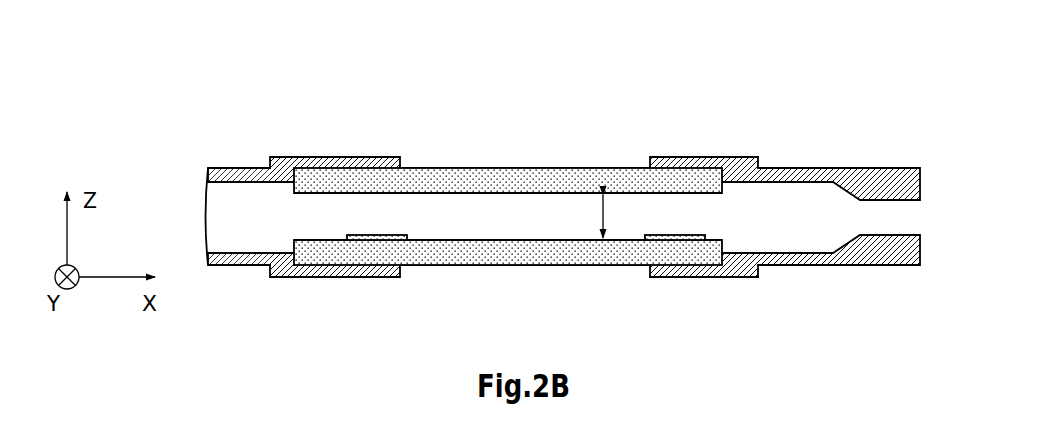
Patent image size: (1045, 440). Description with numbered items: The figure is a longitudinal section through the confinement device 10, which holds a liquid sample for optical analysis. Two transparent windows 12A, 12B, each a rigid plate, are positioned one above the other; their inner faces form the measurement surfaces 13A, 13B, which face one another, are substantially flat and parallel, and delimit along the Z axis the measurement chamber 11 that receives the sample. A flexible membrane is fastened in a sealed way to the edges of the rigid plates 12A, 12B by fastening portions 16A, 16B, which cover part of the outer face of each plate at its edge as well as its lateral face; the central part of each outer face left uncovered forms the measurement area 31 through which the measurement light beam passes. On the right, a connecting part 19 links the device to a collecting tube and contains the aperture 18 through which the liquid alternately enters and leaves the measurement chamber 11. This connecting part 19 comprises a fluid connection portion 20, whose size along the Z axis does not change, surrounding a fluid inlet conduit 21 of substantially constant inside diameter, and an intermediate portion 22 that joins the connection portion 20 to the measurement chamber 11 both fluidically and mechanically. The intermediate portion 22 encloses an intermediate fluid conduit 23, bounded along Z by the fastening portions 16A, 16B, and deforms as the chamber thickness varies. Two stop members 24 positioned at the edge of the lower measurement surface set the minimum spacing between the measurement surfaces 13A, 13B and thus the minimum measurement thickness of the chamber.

The confinement device 10 is at (238, 108).
The measurement chamber 11 is at (548, 230).
The transparent window 12A is at (507, 266).
The transparent window 12B is at (507, 168).
The measurement surface 13A is at (464, 240).
The measurement surface 13B is at (470, 193).
The fastening portion 16A is at (320, 278).
The fastening portion 16B is at (318, 157).
The aperture 18 is at (719, 218).
The connecting part 19 is at (847, 118).
The fluid connection portion 20 is at (885, 168).
The fluid inlet conduit 21 is at (896, 230).
The intermediate portion 22 is at (797, 168).
The intermediate fluid conduit 23 is at (800, 230).
The stop member 24 is at (382, 240).
The measurement area 31 is at (574, 122).